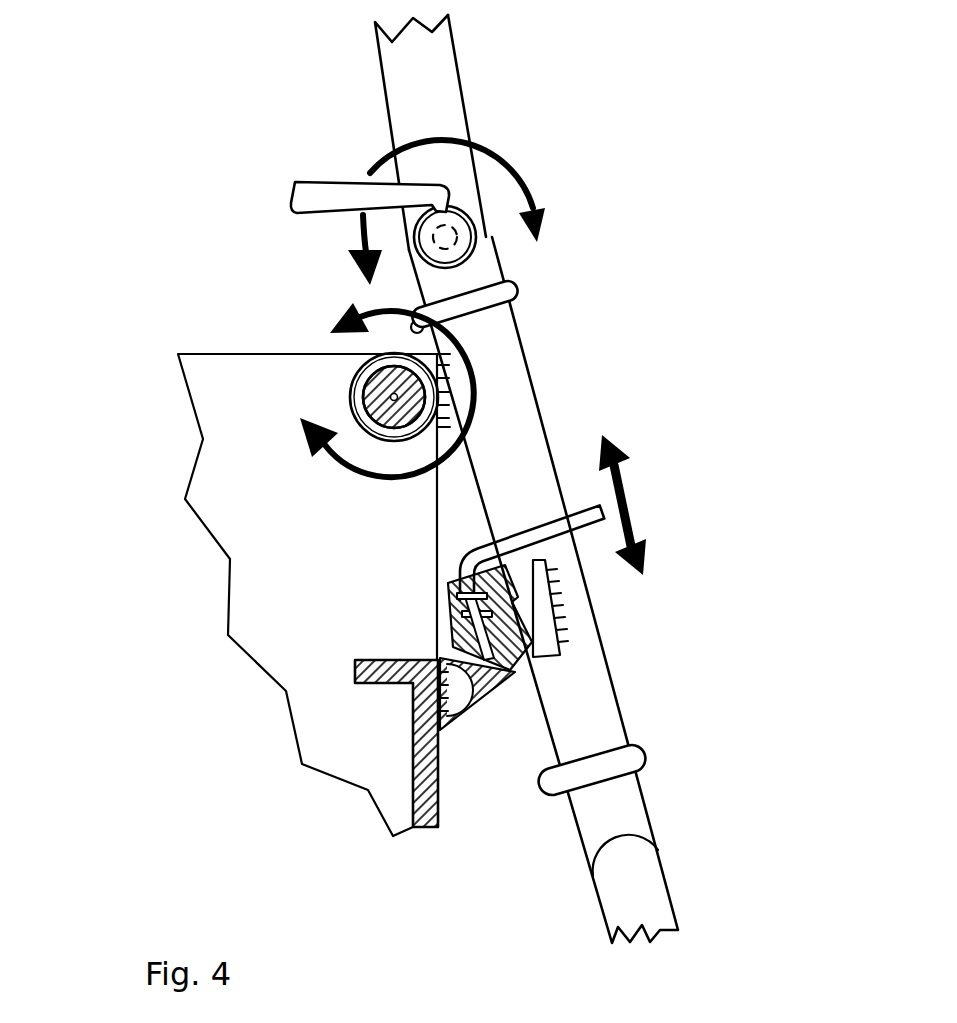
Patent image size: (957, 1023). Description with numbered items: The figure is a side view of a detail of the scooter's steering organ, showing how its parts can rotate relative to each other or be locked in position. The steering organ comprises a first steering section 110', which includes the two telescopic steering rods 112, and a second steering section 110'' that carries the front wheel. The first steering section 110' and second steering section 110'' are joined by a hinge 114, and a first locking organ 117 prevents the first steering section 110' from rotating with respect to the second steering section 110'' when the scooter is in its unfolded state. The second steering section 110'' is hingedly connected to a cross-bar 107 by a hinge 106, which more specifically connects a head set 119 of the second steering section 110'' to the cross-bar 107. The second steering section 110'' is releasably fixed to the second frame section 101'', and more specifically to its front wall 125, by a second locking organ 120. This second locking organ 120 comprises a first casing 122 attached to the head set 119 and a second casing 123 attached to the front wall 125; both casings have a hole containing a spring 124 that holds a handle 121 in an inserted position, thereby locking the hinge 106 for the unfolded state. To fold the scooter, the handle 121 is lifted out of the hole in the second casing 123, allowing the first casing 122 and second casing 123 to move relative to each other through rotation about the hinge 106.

The second frame section 101'' is at (241, 595).
The hinge 106 is at (370, 387).
The cross-bar 107 is at (375, 383).
The first steering section 110' is at (462, 132).
The second steering section 110'' is at (555, 590).
The telescopic steering rods 112 is at (392, 61).
The hinge 114 is at (452, 238).
The first locking organ 117 is at (307, 197).
The head set 119 is at (510, 289).
The second locking organ 120 is at (558, 675).
The handle 121 is at (548, 527).
The first casing 122 is at (520, 623).
The second casing 123 is at (470, 695).
The spring 124 is at (452, 608).
The front wall 125 is at (418, 751).